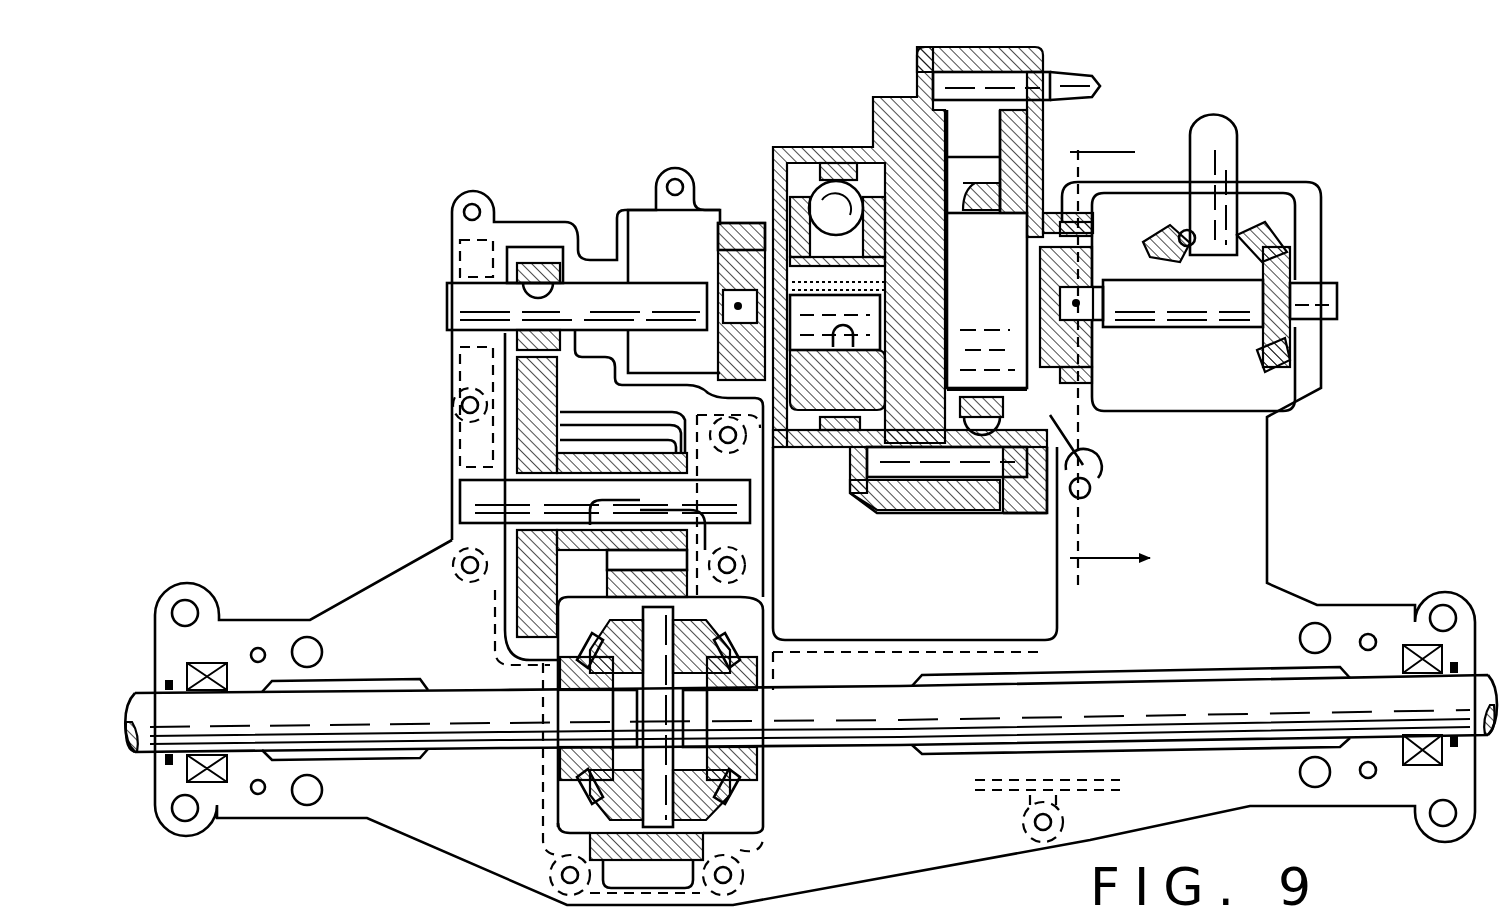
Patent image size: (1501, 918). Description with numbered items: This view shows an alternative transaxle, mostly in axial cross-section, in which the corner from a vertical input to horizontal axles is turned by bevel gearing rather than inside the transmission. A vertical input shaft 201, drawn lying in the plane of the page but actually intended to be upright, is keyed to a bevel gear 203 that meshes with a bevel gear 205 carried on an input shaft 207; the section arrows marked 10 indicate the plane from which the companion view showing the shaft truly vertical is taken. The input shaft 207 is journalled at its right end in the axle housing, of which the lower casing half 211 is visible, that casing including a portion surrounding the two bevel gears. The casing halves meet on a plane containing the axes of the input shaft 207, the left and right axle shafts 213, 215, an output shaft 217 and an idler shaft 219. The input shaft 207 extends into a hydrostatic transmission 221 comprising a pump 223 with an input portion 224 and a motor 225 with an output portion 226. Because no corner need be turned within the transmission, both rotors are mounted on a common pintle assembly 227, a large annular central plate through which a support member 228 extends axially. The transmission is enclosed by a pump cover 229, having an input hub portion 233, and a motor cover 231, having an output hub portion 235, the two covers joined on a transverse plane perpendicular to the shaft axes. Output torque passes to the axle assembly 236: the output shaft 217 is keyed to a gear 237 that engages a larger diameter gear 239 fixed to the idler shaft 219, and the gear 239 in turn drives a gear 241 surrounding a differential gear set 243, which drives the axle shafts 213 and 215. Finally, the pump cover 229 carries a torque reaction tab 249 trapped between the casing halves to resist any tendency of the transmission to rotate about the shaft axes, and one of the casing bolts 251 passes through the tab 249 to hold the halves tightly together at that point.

The section line 10- 10 is at (1105, 360).
The vertical input shaft 201 is at (1228, 162).
The bevel gear 203 is at (1182, 242).
The bevel gear 205 is at (1272, 335).
The input shaft 207 is at (1150, 315).
The lower casing half 211 is at (1225, 470).
The left axle shaft 213 is at (493, 712).
The right axle shaft 215 is at (855, 718).
The output shaft 217 is at (470, 316).
The idler shaft 219 is at (490, 500).
The hydrostatic transmission 221 is at (858, 125).
The pump 223 is at (1040, 301).
The input portion 224 is at (1085, 280).
The motor 225 is at (805, 190).
The output portion 226 is at (718, 268).
The pintle assembly 227 is at (925, 420).
The support member 228 is at (822, 320).
The pump cover 229 is at (1025, 498).
The motor cover 231 is at (880, 503).
The input hub portion 233 is at (1095, 373).
The output hub portion 235 is at (745, 240).
The axle assembly 236 is at (430, 420).
The gear 237 is at (540, 275).
The gear 239 is at (560, 380).
The gear 241 is at (590, 855).
The differential gear set 243 is at (745, 800).
The torque reaction tab 249 is at (1095, 470).
The bolt 251 is at (1100, 490).